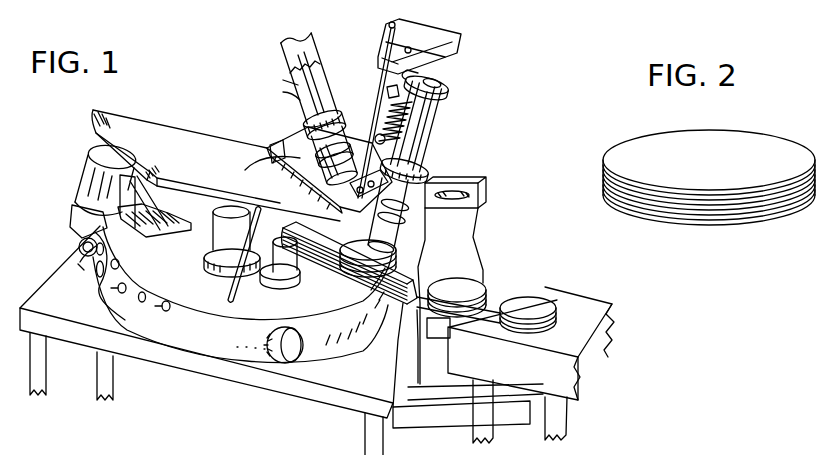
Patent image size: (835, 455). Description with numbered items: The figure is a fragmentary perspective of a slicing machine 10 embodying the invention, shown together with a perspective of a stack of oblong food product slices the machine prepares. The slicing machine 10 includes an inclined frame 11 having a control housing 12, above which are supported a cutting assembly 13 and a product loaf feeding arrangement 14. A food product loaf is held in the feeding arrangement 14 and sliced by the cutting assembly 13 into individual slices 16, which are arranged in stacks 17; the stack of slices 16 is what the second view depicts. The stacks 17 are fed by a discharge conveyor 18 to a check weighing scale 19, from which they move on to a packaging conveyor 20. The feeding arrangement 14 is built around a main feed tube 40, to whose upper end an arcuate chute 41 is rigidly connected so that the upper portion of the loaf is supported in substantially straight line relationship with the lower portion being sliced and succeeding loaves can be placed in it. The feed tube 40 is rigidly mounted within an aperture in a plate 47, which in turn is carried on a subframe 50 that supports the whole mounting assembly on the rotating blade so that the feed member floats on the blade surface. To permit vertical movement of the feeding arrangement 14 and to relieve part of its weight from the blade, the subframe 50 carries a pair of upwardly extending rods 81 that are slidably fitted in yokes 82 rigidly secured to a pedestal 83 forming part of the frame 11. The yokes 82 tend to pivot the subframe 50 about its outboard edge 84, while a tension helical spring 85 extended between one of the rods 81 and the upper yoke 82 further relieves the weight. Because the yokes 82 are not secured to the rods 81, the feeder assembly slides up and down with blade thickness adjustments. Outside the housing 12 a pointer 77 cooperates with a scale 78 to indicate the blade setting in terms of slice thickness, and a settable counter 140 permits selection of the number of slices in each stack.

In FIG. 1, the slicing machine 10 is at (477, 172).
In FIG. 1, the inclined frame 11 is at (187, 373).
In FIG. 1, the control housing 12 is at (237, 347).
In FIG. 1, the cutting assembly 13 is at (200, 125).
In FIG. 1, the product loaf feeding arrangement 14 is at (337, 75).
In FIG. 2, the slices 16 is at (709, 174).
In FIG. 1, the stacks 17 is at (406, 258).
In FIG. 2, the stacks 17 is at (753, 141).
In FIG. 1, the discharge conveyor 18 is at (394, 309).
In FIG. 1, the check weighing scale 19 is at (472, 231).
In FIG. 1, the packaging conveyor 20 is at (588, 324).
In FIG. 1, the main feed tube 40 is at (323, 167).
In FIG. 1, the arcuate chute 41 is at (283, 92).
In FIG. 1, the plate 47 is at (308, 178).
In FIG. 1, the subframe 50 is at (340, 126).
In FIG. 1, the pointer 77 is at (84, 262).
In FIG. 1, the scale 78 is at (108, 280).
In FIG. 1, the rods 81 is at (385, 123).
In FIG. 1, the yokes 82 is at (445, 90).
In FIG. 1, the pedestal 83 is at (430, 138).
In FIG. 1, the outboard edge 84 is at (390, 200).
In FIG. 1, the tension helical spring 85 is at (438, 108).
In FIG. 1, the settable counter 140 is at (93, 238).